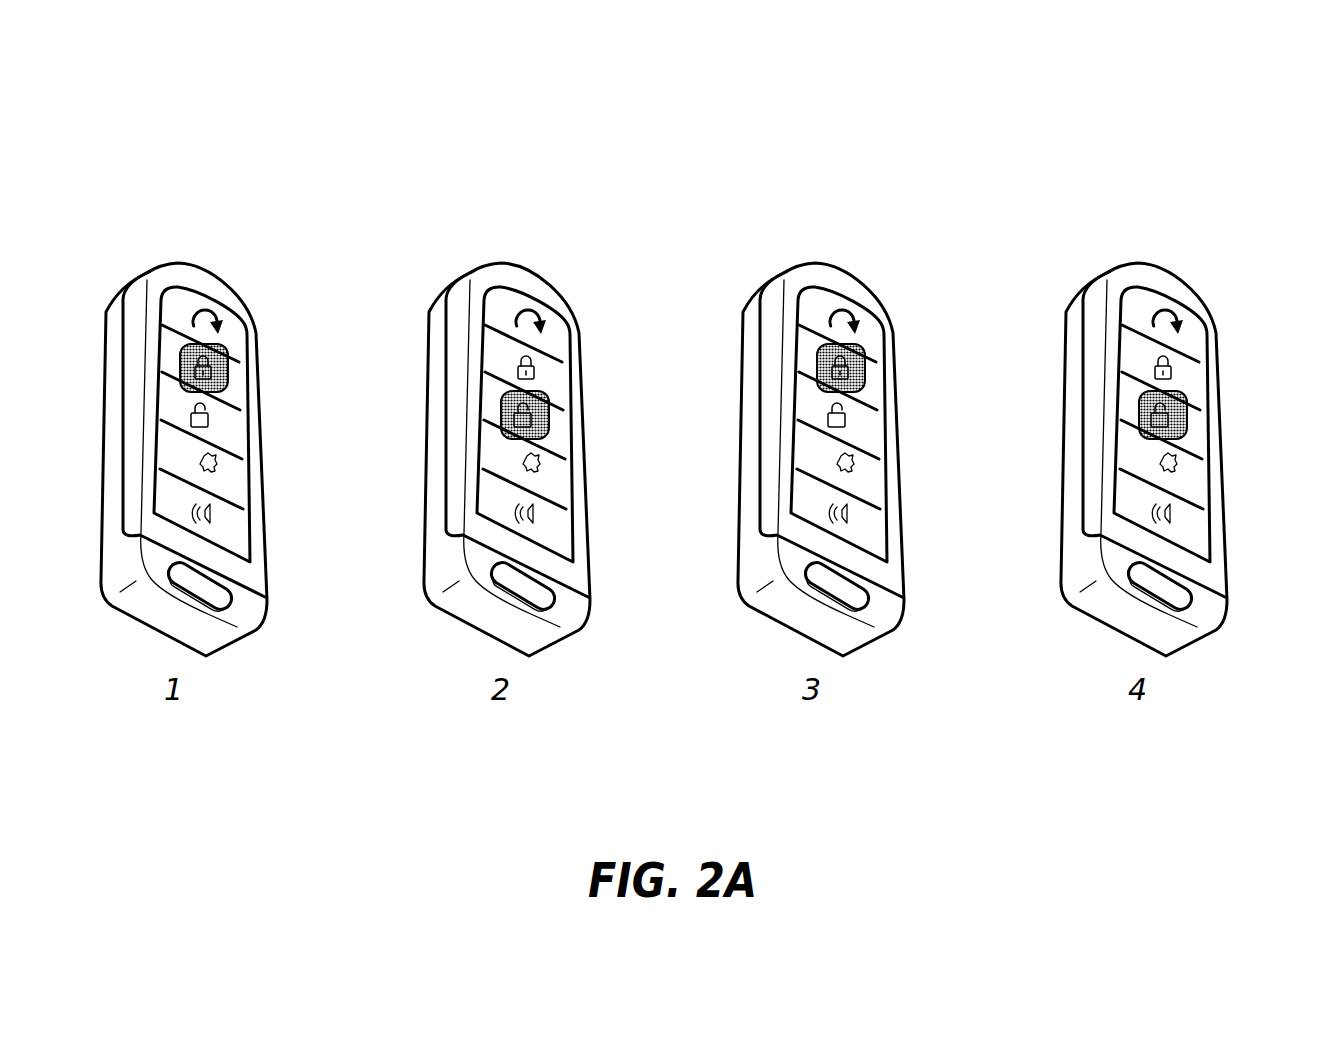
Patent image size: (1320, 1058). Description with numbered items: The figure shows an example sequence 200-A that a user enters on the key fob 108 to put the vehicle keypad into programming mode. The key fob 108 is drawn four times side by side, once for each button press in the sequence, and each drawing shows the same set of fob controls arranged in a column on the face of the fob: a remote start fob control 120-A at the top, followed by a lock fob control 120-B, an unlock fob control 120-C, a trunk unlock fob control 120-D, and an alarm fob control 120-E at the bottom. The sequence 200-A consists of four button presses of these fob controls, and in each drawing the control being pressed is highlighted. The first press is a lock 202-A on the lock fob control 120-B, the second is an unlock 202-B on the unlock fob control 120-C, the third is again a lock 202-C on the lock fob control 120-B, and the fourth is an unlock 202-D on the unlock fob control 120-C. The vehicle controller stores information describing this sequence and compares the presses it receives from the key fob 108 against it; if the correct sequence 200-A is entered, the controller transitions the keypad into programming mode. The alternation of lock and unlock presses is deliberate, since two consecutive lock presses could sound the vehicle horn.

The sequence 200-A is at (168, 72).
The key fob 108 is at (178, 262).
The remote start fob control 120-A is at (227, 328).
The lock fob control 120-B is at (232, 375).
The unlock fob control 120-C is at (233, 427).
The trunk unlock fob control 120-D is at (237, 475).
The alarm fob control 120-E is at (238, 530).
The lock button press 202-A is at (180, 358).
The unlock button press 202-B is at (501, 407).
The lock button press 202-C is at (817, 358).
The unlock button press 202-D is at (1139, 407).